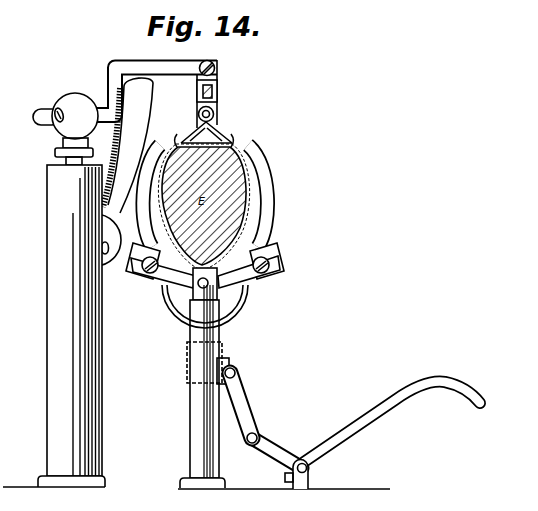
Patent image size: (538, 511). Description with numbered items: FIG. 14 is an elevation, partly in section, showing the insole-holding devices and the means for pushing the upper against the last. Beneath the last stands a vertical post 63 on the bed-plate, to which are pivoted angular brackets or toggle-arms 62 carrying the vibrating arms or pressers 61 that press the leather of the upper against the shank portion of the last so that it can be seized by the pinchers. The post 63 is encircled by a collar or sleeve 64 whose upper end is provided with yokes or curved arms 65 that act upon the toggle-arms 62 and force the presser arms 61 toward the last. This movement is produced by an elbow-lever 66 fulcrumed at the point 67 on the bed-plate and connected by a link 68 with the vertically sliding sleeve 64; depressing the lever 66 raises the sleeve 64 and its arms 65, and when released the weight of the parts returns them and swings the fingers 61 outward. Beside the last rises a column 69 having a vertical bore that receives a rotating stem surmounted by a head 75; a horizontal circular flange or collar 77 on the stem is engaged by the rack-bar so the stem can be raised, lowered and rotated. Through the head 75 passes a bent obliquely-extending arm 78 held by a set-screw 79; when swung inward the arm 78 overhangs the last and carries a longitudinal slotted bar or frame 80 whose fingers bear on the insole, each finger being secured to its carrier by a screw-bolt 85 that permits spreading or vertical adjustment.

The vibrating arms or pressers 61 is at (148, 215).
The angular brackets or toggle-arms 62 is at (153, 278).
The vertical post 63 is at (192, 410).
The collar or sleeve 64 is at (190, 362).
The yokes or curved arms 65 is at (244, 312).
The elbow-lever 66 is at (366, 425).
The fulcrum point 67 is at (309, 468).
The link 68 is at (244, 404).
The column 69 is at (47, 357).
The head 75 is at (75, 115).
The horizontal circular flange or collar 77 is at (56, 151).
The bent obliquely-extending arm 78 is at (45, 109).
The set-screw 79 is at (56, 125).
The longitudinal slotted bar or frame 80 is at (217, 92).
The screw-bolt 85 is at (214, 114).